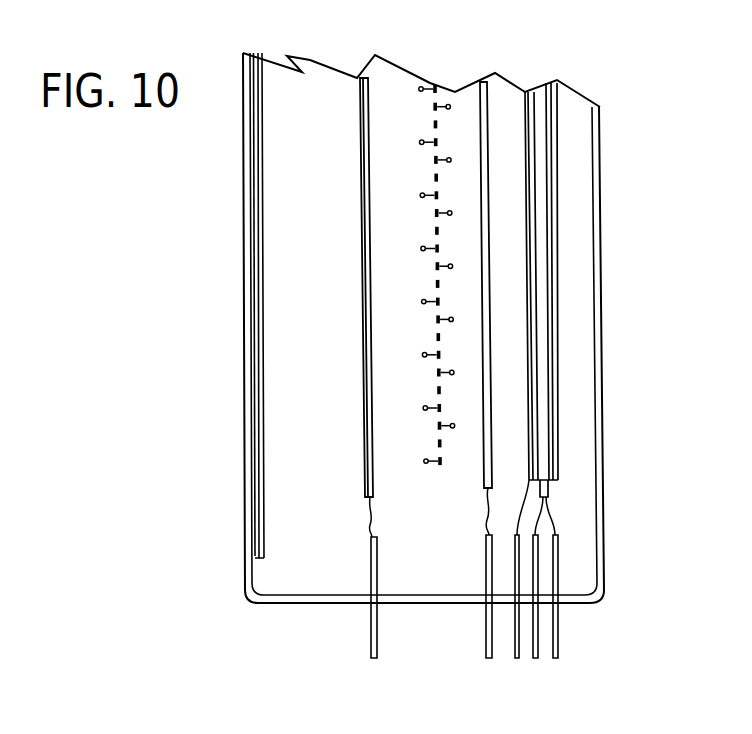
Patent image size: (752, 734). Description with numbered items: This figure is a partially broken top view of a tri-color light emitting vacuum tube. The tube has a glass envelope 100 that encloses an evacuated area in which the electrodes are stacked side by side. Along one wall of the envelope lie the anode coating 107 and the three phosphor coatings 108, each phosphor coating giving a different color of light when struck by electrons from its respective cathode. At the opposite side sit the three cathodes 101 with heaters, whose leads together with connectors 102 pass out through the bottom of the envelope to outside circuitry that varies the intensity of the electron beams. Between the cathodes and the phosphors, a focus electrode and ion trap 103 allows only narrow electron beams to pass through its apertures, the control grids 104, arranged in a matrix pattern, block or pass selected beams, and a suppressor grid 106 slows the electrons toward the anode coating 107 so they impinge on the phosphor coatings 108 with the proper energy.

The glass envelope 100 is at (601, 170).
The cathodes 101 is at (547, 385).
The connectors 102 is at (540, 637).
The focus electrode and ion trap 103 is at (487, 309).
The control grids 104 is at (438, 468).
The suppressor grid 106 is at (367, 436).
The anode coating 107 is at (248, 303).
The phosphor coatings 108 is at (264, 233).